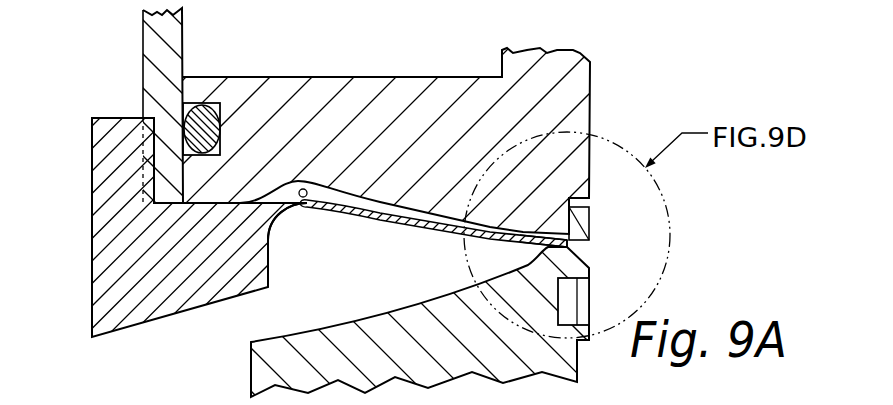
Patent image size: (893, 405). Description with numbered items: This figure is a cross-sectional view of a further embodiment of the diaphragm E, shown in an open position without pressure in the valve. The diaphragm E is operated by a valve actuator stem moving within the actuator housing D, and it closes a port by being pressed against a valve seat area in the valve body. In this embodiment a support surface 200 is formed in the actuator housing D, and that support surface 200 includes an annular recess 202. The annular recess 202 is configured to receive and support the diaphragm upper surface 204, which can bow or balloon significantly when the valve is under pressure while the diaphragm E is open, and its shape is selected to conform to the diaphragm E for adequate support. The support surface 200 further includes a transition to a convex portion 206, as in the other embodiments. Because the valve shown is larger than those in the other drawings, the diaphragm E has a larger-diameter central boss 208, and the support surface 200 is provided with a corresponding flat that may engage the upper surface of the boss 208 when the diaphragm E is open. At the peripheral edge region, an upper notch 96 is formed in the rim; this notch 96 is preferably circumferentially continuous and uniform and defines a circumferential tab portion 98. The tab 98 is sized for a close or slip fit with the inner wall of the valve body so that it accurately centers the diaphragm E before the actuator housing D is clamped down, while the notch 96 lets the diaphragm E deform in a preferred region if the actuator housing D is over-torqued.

The actuator housing D is at (380, 77).
The diaphragm E is at (108, 279).
The central boss 208 is at (113, 145).
The annular recess 202 is at (312, 188).
The diaphragm upper surface 204 is at (310, 205).
The support surface 200 is at (344, 210).
The convex portion 206 is at (397, 222).
The notch 96 is at (572, 238).
The tab portion 98 is at (572, 246).